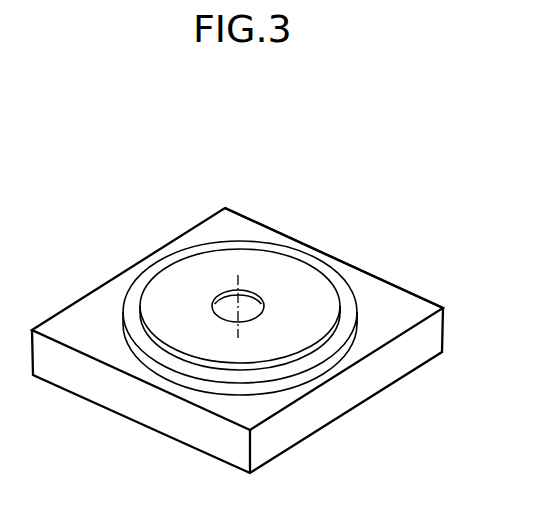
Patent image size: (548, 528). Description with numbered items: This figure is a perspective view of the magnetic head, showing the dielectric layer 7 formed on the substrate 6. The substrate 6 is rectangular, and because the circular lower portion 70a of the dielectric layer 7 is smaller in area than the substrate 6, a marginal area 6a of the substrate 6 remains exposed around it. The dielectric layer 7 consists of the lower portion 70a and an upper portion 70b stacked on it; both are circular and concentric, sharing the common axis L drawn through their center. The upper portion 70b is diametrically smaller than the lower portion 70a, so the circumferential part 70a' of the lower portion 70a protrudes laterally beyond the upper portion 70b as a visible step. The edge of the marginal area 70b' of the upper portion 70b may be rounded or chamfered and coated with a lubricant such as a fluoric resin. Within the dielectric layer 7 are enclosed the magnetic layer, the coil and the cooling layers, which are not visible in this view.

The substrate 6 is at (419, 354).
The marginal area 6a is at (401, 299).
The dielectric layer 7 is at (303, 325).
The lower portion 70a is at (293, 288).
The upper portion 70b is at (285, 279).
The circumferential part 70a' is at (387, 379).
The marginal area of the upper portion 70b' is at (347, 402).
The common axis L is at (233, 291).